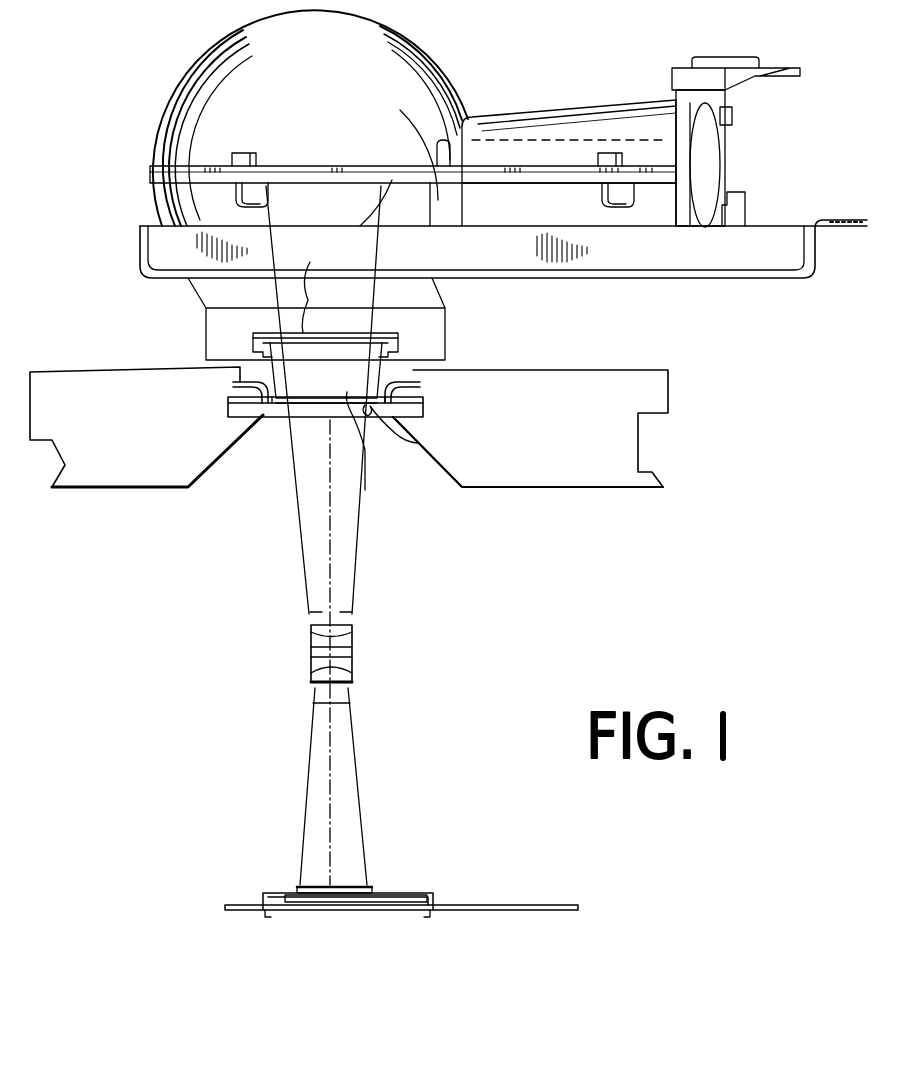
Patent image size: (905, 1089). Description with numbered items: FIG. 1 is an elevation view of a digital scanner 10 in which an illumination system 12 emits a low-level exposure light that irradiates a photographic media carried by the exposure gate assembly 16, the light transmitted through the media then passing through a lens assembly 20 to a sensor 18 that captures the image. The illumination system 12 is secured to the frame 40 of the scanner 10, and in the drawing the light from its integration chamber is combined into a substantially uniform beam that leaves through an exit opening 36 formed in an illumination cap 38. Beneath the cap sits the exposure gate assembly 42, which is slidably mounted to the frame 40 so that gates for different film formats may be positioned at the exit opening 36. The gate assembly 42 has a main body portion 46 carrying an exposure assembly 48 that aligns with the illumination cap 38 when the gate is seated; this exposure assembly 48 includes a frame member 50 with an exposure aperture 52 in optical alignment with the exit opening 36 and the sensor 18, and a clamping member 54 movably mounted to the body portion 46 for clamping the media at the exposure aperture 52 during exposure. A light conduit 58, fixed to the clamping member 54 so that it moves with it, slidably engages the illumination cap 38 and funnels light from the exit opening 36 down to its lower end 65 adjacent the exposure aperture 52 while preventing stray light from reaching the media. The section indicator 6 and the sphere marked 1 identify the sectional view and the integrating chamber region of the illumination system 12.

The integrating sphere 1 is at (395, 62).
The digital scanner 10 is at (615, 582).
The illumination system 12 is at (479, 114).
The exposure gate assembly 16 is at (357, 333).
The sensor 18 is at (378, 881).
The lens assembly 20 is at (311, 657).
The exit opening 36 is at (325, 286).
The illumination cap 38 is at (207, 312).
The frame 40 is at (782, 225).
The exposure gate assembly 42 is at (646, 366).
The main body portion 46 is at (587, 475).
The exposure assembly 48 is at (268, 428).
The frame member 50 is at (408, 404).
The exposure aperture 52 is at (417, 443).
The clamping member 54 is at (237, 383).
The light conduit 58 is at (338, 384).
The lower end 65 is at (373, 450).
The section line 6- 6 is at (182, 318).